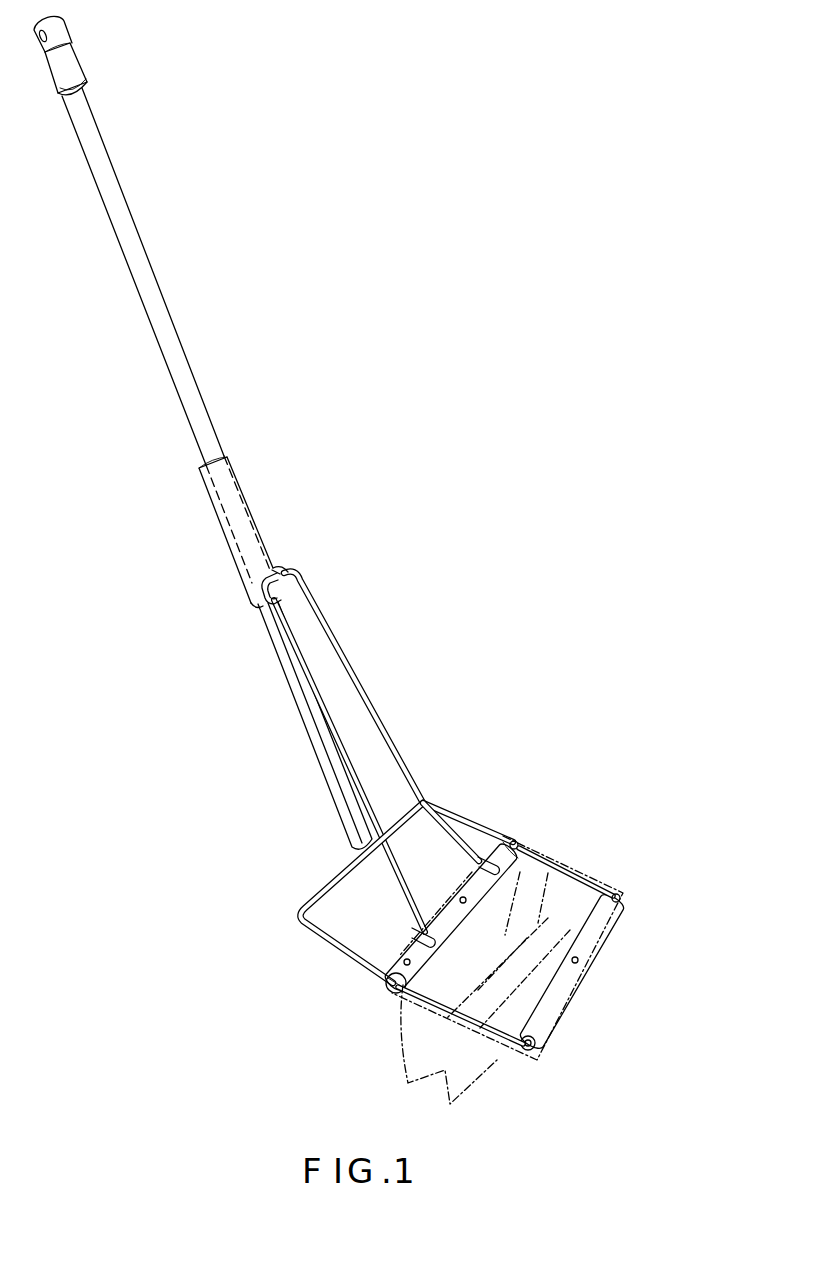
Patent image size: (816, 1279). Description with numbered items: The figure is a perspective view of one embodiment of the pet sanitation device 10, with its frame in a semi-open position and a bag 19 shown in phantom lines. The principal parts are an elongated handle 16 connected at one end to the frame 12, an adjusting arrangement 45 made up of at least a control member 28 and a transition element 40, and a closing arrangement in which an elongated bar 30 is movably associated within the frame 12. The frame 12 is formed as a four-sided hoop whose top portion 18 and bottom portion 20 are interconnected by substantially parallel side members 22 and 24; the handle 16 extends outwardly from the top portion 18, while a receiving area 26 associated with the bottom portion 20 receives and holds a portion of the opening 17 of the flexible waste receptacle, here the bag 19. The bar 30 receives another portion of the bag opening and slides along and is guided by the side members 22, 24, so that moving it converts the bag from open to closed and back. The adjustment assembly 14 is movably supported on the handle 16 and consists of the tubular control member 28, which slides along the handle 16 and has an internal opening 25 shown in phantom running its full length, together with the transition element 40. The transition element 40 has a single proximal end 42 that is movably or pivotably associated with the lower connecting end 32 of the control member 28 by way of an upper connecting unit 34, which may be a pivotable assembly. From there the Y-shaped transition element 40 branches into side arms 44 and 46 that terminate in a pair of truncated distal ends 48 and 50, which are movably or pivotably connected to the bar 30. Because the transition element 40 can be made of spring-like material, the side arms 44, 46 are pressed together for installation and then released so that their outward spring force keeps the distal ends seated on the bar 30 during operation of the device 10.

The pet sanitation device 10 is at (418, 412).
The frame 12 is at (597, 847).
The adjustment assembly 14 is at (415, 715).
The handle 16 is at (150, 176).
The opening 17 is at (590, 892).
The top portion 18 is at (320, 905).
The bag 19 is at (465, 1080).
The bottom portion 20 is at (537, 1055).
The side member 22 is at (385, 982).
The side member 24 is at (492, 834).
The internal opening 25 is at (205, 478).
The receiving area 26 is at (565, 978).
The control member 28 is at (240, 514).
The bar 30 is at (465, 912).
The lower connecting end 32 is at (250, 603).
The upper connecting unit 34 is at (280, 568).
The transition element 40 is at (315, 600).
The proximal end 42 is at (262, 578).
The side arm 44 is at (312, 688).
The adjusting arrangement 45 is at (459, 833).
The side arm 46 is at (338, 656).
The distal end 48 is at (398, 940).
The distal end 50 is at (506, 828).